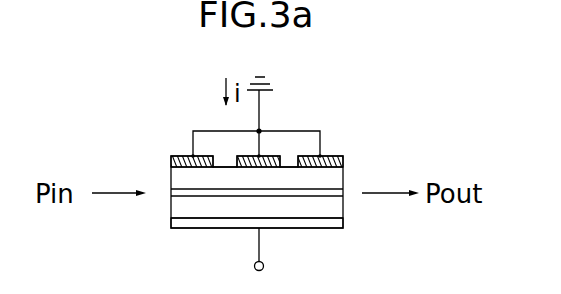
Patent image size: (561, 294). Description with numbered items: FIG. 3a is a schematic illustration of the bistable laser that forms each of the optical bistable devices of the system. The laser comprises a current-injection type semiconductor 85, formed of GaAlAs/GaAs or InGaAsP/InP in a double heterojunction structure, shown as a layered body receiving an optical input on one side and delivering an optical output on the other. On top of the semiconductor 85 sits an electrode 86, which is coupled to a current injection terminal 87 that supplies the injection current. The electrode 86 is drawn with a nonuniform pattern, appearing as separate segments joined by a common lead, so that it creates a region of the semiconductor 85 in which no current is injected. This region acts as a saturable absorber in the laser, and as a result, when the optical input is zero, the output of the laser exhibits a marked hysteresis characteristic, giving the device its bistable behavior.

The current-injection type semiconductor 85 is at (336, 175).
The electrode 86 is at (183, 156).
The current injection terminal 87 is at (264, 267).